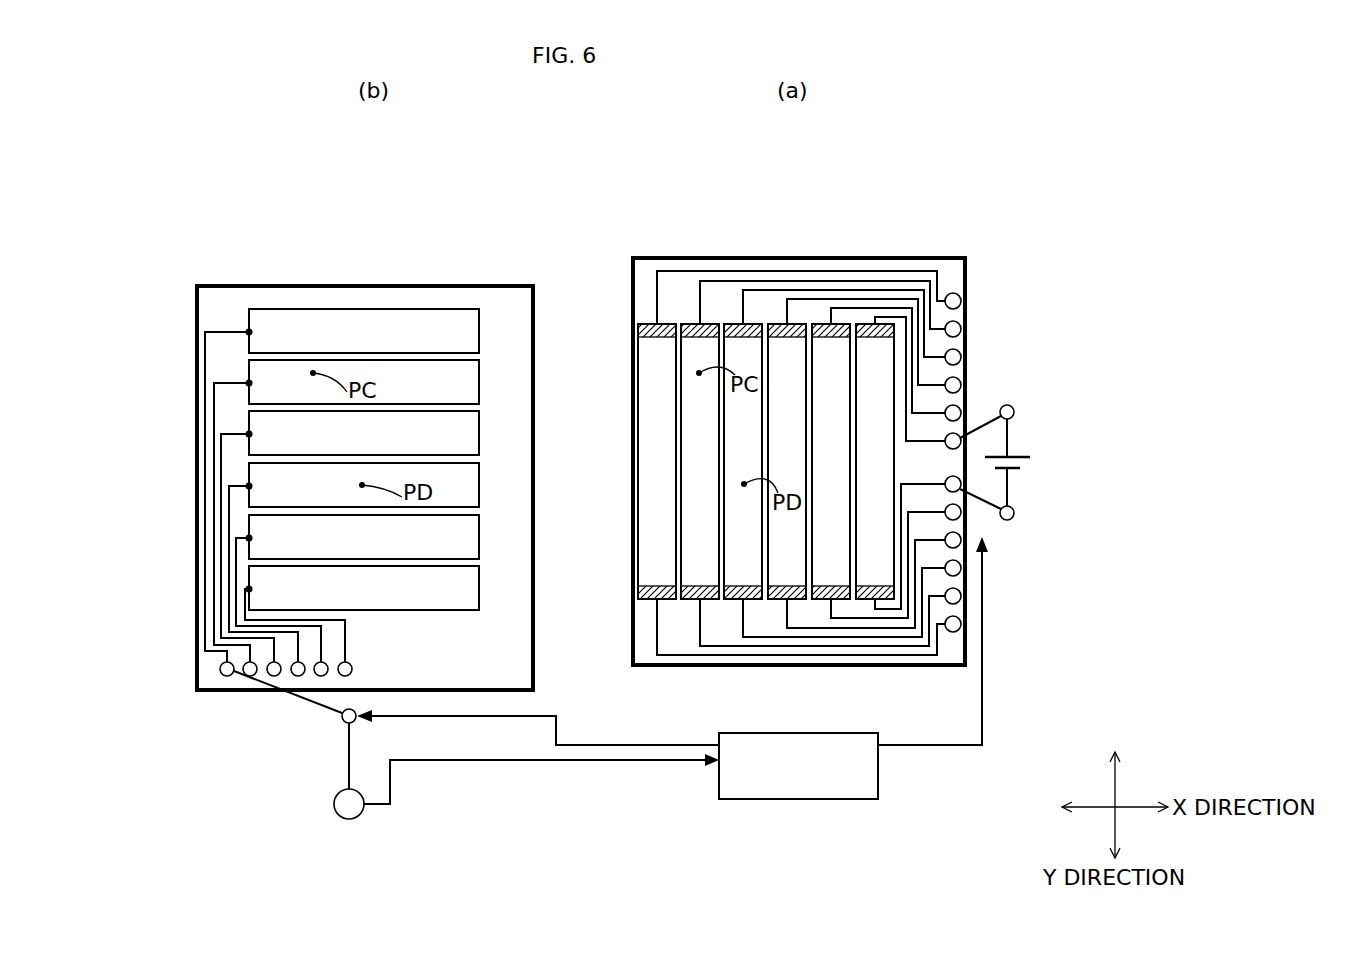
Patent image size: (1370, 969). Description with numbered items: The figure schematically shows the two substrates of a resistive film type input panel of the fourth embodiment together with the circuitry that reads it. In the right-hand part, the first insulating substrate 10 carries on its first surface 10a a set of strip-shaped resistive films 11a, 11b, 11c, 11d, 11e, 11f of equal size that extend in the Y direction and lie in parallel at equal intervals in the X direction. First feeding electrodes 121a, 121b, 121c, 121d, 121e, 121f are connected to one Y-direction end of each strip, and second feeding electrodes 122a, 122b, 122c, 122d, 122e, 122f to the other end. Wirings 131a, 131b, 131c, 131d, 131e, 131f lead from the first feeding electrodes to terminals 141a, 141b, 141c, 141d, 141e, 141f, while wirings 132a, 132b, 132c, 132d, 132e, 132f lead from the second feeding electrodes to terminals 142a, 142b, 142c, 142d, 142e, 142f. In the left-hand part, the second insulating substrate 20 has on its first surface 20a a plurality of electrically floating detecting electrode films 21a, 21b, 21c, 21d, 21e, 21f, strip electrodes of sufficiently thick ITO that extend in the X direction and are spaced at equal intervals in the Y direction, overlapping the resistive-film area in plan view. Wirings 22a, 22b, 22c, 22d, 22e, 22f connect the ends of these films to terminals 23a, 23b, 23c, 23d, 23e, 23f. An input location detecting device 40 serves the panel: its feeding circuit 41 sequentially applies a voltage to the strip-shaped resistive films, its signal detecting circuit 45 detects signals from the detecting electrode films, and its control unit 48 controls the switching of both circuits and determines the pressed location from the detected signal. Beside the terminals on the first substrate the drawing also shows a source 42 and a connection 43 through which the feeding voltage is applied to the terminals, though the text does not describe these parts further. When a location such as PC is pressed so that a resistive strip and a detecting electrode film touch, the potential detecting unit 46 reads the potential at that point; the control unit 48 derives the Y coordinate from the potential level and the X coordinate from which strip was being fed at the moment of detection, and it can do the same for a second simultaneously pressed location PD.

The first insulating substrate 10 is at (658, 258).
The first surface of the first insulating substrate 10a is at (642, 295).
The strip-shaped resistive film 11a is at (674, 458).
The strip-shaped resistive film 11b is at (717, 458).
The strip-shaped resistive film 11c is at (760, 458).
The strip-shaped resistive film 11d is at (804, 458).
The strip-shaped resistive film 11e is at (848, 458).
The strip-shaped resistive film 11f is at (892, 458).
The first feeding electrode 121a is at (656, 583).
The first feeding electrode 121b is at (701, 585).
The first feeding electrode 121c is at (745, 585).
The first feeding electrode 121d is at (789, 585).
The first feeding electrode 121e is at (833, 585).
The first feeding electrode 121f is at (877, 585).
The second feeding electrode 122a is at (663, 338).
The second feeding electrode 122b is at (702, 338).
The second feeding electrode 122c is at (746, 338).
The second feeding electrode 122d is at (782, 324).
The second feeding electrode 122e is at (847, 324).
The second feeding electrode 122f is at (887, 324).
The wiring 131a is at (672, 658).
The wiring 131b is at (723, 648).
The wiring 131c is at (772, 638).
The wiring 131d is at (818, 629).
The wiring 131e is at (855, 622).
The wiring 131f is at (897, 613).
The wiring 132a is at (690, 271).
The wiring 132b is at (730, 281).
The wiring 132c is at (763, 291).
The wiring 132d is at (827, 299).
The wiring 132e is at (867, 309).
The wiring 132f is at (897, 317).
The terminal 141a is at (961, 630).
The terminal 141b is at (961, 602).
The terminal 141c is at (961, 574).
The terminal 141d is at (961, 546).
The terminal 141e is at (961, 518).
The terminal 141f is at (961, 491).
The terminal 142a is at (961, 297).
The terminal 142b is at (961, 325).
The terminal 142c is at (961, 353).
The terminal 142d is at (961, 381).
The terminal 142e is at (961, 410).
The terminal 142f is at (961, 438).
The second insulating substrate 20 is at (424, 284).
The first surface of the second insulating substrate 20a is at (467, 298).
The detecting electrode film 21a is at (325, 346).
The detecting electrode film 21b is at (444, 395).
The detecting electrode film 21c is at (325, 449).
The detecting electrode film 21d is at (325, 499).
The detecting electrode film 21e is at (325, 551).
The detecting electrode film 21f is at (325, 602).
The wiring 22a is at (205, 345).
The wiring 22b is at (214, 405).
The wiring 22c is at (221, 455).
The wiring 22d is at (229, 503).
The wiring 22e is at (236, 553).
The wiring 22f is at (245, 598).
The terminal 23a is at (220, 671).
The terminal 23b is at (245, 675).
The terminal 23c is at (270, 676).
The terminal 23d is at (294, 676).
The terminal 23e is at (327, 664).
The terminal 23f is at (353, 671).
The input location detecting device 40 is at (658, 720).
The feeding circuit 41 is at (1077, 568).
The battery 42 is at (1025, 468).
The connection wire 43 is at (978, 497).
The signal detecting circuit 45 is at (417, 772).
The potential detecting unit 46 is at (340, 816).
The control unit 48 is at (790, 780).